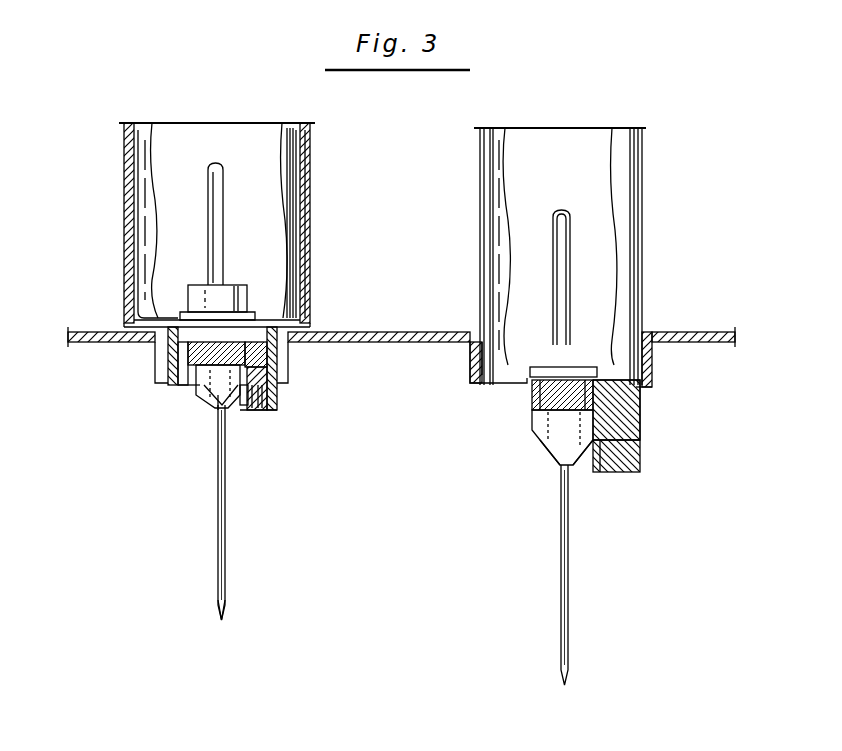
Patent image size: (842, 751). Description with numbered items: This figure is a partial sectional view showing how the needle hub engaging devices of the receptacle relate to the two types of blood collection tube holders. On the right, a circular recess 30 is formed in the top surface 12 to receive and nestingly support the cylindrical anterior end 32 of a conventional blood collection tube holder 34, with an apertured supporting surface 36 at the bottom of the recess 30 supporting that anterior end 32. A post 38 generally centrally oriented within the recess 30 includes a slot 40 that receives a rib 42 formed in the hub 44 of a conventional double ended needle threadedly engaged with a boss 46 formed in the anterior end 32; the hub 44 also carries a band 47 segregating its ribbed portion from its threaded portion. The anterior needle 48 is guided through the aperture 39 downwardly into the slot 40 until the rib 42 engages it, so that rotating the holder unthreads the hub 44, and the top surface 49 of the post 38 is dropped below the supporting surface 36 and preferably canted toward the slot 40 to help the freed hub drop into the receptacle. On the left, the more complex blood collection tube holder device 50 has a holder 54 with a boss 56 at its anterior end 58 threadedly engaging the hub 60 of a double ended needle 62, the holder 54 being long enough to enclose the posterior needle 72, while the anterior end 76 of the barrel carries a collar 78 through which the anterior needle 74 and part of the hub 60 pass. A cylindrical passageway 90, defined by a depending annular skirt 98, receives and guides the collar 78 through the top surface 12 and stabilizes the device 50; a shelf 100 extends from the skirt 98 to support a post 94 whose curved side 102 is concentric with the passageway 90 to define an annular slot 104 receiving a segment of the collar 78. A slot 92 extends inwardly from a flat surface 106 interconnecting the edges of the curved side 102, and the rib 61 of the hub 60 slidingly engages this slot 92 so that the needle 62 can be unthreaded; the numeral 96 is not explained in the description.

The top surface 12 is at (97, 331).
The circular recess 30 is at (645, 322).
The cylindrical anterior end 32 is at (652, 362).
The blood collection tube holder 34 is at (643, 232).
The apertured supporting surface 36 is at (520, 360).
The post 38 is at (642, 466).
The aperture 39 is at (536, 345).
The slot 40 is at (606, 476).
The rib 42 is at (624, 478).
The hub 44 is at (531, 416).
The boss 46 is at (530, 398).
The band 47 is at (528, 455).
The anterior needle 48 is at (561, 557).
The top surface 49 is at (642, 428).
The blood collection tube holder device 50 is at (318, 186).
The holder 54 is at (165, 128).
The boss 56 is at (200, 285).
The anterior end 58 is at (305, 298).
The hub 60 is at (198, 392).
The rib 61 is at (214, 400).
The double ended needle 62 is at (216, 532).
The posterior needle 72 is at (228, 178).
The anterior needle 74 is at (218, 582).
The anterior end 76 is at (311, 232).
The collar 78 is at (172, 372).
The cylindrical passageway 90 is at (182, 388).
The slot 92 is at (250, 425).
The post 94 is at (268, 428).
The collar 96 is at (270, 362).
The depending annular skirt 98 is at (158, 352).
The shelf 100 is at (283, 428).
The curved side 102 is at (272, 378).
The annular slot 104 is at (293, 416).
The flat surface 106 is at (213, 425).